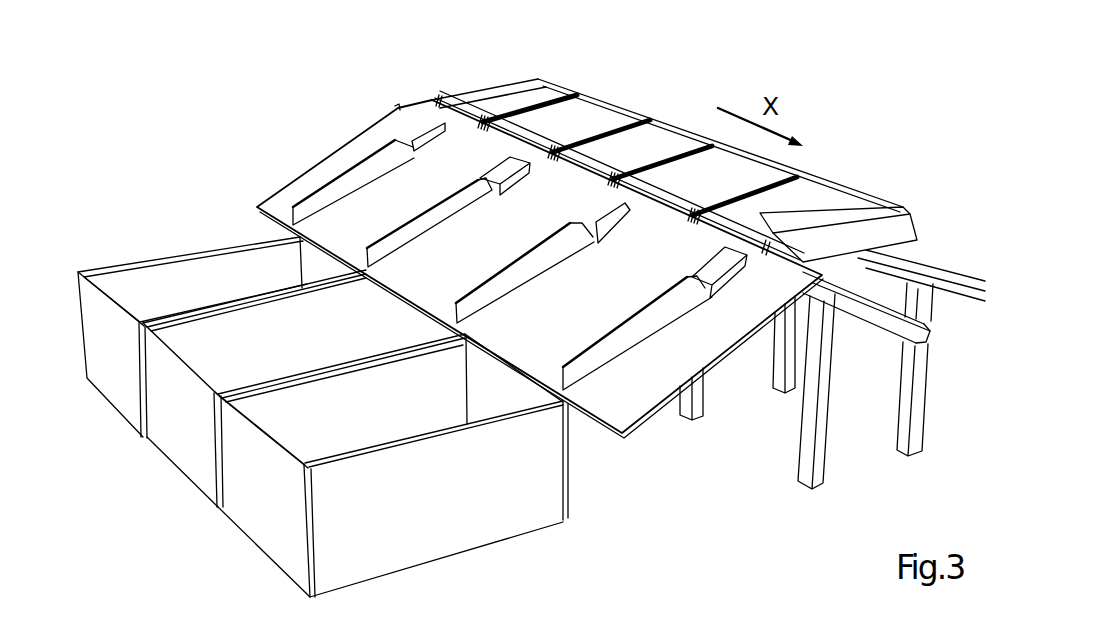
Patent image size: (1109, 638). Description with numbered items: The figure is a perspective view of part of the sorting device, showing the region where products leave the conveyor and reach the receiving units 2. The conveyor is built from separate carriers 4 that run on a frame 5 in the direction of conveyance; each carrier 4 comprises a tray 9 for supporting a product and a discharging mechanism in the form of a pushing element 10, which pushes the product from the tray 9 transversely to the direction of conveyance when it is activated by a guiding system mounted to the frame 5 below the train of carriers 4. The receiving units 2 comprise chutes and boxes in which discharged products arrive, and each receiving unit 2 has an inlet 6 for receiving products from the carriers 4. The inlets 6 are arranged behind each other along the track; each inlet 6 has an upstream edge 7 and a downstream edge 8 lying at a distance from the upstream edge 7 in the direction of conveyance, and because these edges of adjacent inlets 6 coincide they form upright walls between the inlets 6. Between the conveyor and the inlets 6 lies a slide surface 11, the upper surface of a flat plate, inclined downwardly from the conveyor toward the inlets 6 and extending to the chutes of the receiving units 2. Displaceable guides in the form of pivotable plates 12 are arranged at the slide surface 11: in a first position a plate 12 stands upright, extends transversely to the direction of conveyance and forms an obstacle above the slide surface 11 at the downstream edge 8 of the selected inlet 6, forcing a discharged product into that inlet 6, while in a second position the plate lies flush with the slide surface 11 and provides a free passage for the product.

The receiving unit 2 is at (347, 225).
The carrier 4 is at (499, 88).
The frame 5 is at (820, 445).
The inlet 6 is at (495, 240).
The upstream edge 7 is at (413, 228).
The downstream edge 8 is at (518, 268).
The tray 9 is at (538, 90).
The pushing element 10 is at (787, 218).
The slide surface 11 is at (547, 193).
The pivotable plate 12 is at (737, 339).